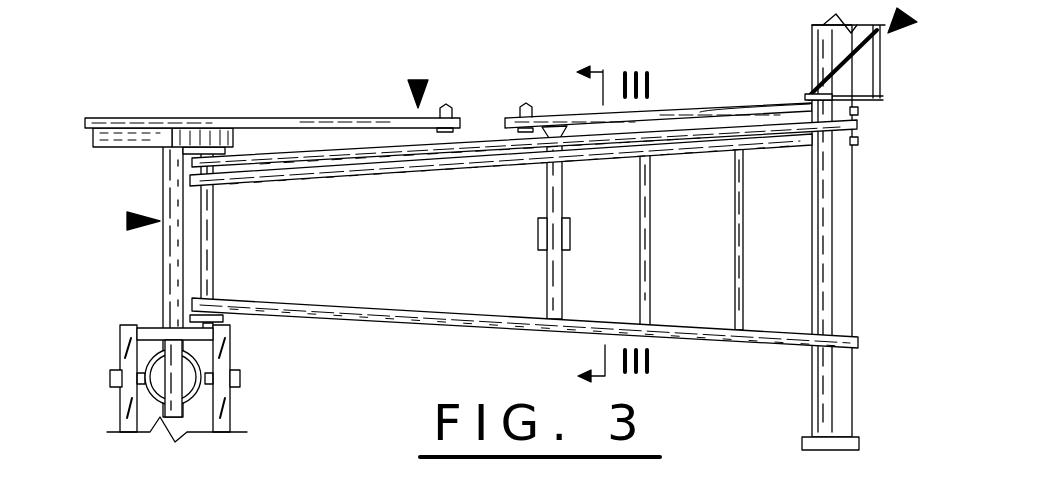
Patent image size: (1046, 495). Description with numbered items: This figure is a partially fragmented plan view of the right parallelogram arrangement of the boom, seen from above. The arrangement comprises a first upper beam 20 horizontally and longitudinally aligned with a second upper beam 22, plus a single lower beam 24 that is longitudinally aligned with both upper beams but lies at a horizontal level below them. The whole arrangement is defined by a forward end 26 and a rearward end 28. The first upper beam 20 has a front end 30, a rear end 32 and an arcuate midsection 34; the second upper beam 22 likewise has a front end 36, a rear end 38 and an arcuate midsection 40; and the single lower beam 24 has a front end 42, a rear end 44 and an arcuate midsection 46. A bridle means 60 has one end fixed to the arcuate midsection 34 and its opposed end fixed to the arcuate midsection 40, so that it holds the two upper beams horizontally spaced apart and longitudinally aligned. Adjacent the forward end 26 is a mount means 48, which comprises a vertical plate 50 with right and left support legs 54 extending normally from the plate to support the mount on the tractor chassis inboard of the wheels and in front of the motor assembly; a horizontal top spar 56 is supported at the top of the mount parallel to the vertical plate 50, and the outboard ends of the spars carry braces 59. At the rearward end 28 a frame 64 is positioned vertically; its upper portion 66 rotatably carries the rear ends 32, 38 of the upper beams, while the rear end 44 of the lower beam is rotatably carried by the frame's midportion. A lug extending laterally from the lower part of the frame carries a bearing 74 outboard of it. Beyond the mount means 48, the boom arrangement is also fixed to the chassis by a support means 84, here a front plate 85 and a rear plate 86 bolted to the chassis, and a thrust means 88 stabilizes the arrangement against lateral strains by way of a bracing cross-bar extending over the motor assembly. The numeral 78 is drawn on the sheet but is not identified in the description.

The first upper beam 20 is at (513, 320).
The second upper beam 22 is at (477, 145).
The single lower beam 24 is at (350, 168).
The forward end 26 is at (775, 228).
The rearward end 28 is at (67, 222).
The front end 30 is at (860, 342).
The rear end 32 is at (220, 305).
The arcuate midsection 34 is at (532, 325).
The front end 36 is at (858, 147).
The rear end 38 is at (215, 148).
The arcuate midsection 40 is at (447, 150).
The front end 42 is at (770, 150).
The rear end 44 is at (240, 172).
The arcuate midsection 46 is at (532, 160).
The mount means 48 is at (811, 6).
The vertical plate 50 is at (880, 80).
The support legs 54 is at (800, 92).
The horizontal top spar 56 is at (837, 298).
The braces 59 is at (802, 447).
The bridle means 60 is at (497, 245).
The frame 64 is at (128, 221).
The upper portion 66 is at (167, 273).
The bearing 74 is at (155, 328).
The base support 78 is at (118, 365).
The support means 84 is at (410, 80).
The front plate 85 is at (700, 112).
The rear plate 86 is at (368, 117).
The thrust means 88 is at (180, 102).